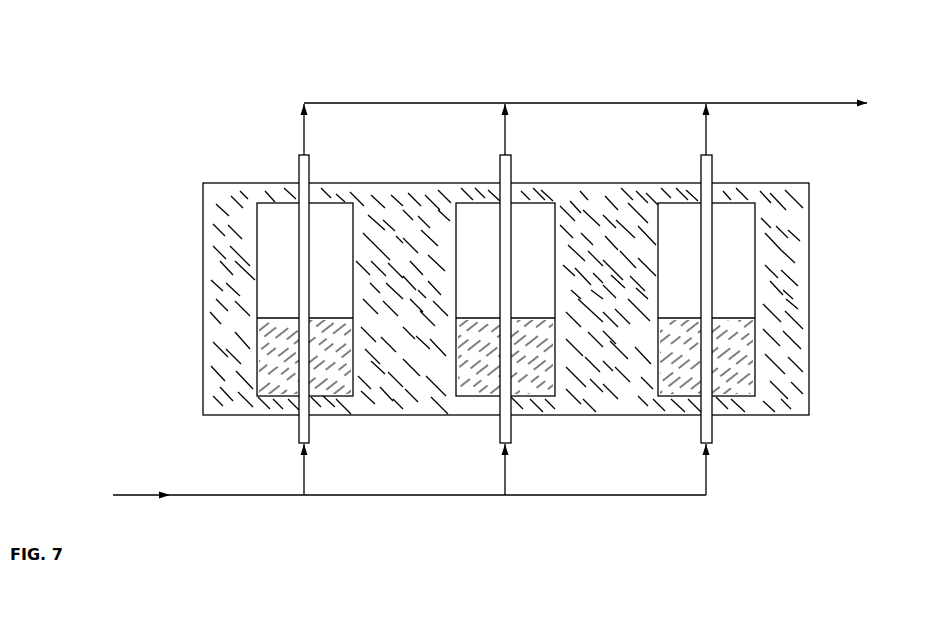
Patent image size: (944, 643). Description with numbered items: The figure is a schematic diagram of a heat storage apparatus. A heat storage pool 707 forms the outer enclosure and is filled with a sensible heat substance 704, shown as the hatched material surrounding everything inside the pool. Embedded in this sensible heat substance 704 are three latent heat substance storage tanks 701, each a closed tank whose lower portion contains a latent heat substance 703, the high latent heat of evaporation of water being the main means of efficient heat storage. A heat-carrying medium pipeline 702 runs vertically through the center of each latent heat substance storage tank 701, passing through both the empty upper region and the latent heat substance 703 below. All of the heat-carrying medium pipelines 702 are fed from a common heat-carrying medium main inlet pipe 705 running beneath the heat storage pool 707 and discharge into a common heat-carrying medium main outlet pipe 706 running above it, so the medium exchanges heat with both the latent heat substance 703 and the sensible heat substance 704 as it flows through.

The latent heat substance storage tank 701 is at (277, 240).
The heat-carrying medium pipeline 702 is at (292, 168).
The latent heat substance 703 is at (270, 350).
The sensible heat substance 704 is at (780, 240).
The heat-carrying medium main inlet pipe 705 is at (135, 483).
The heat-carrying medium main outlet pipe 706 is at (852, 95).
The heat storage pool 707 is at (192, 375).